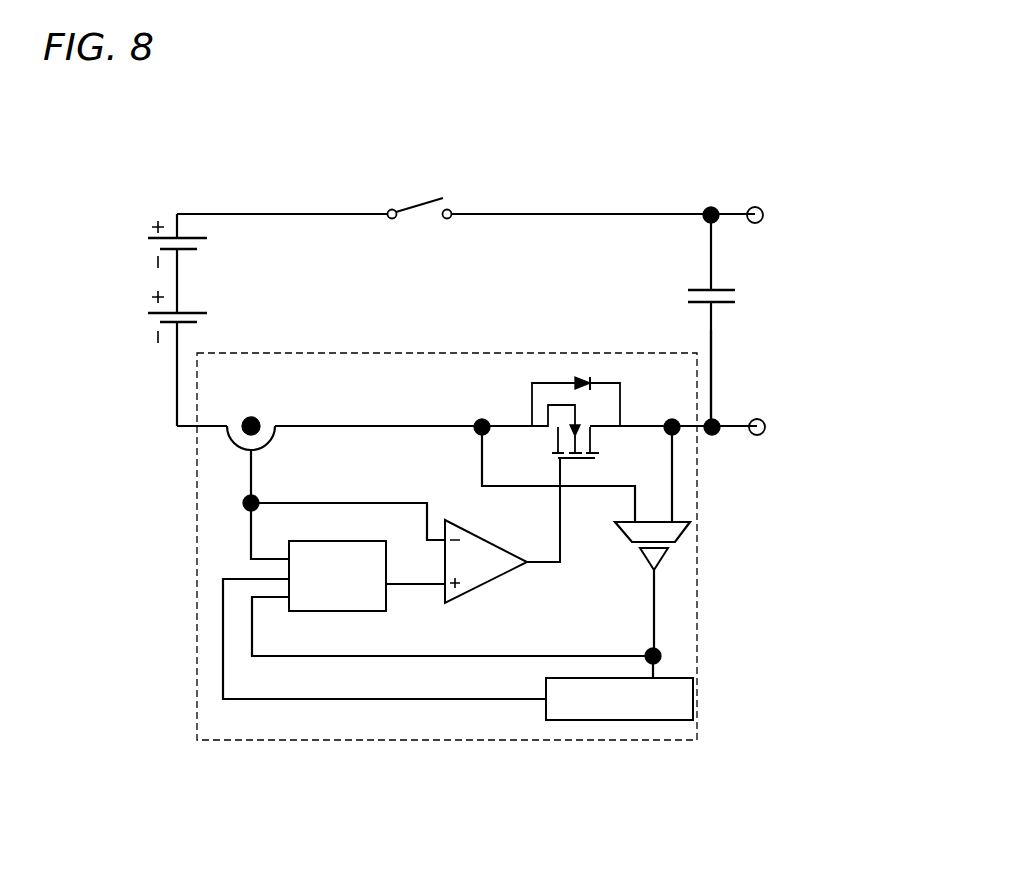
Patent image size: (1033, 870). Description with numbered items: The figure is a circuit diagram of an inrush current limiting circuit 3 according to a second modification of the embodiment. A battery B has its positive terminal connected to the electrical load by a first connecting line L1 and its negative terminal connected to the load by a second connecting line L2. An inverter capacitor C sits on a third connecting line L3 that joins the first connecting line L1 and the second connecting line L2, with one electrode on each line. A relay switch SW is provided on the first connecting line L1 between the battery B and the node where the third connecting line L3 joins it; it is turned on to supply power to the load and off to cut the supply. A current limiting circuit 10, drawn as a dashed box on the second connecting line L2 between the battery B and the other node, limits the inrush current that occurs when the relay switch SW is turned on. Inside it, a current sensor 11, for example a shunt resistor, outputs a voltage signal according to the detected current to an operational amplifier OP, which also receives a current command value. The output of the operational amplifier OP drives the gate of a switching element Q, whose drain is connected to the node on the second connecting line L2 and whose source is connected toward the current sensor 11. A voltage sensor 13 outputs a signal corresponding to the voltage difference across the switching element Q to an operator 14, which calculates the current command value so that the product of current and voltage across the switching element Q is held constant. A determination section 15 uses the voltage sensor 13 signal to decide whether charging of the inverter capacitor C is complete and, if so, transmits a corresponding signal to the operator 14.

The inrush current limiting circuit 3 is at (757, 196).
The current limiting circuit 10 is at (698, 618).
The current sensor 11 is at (259, 418).
The voltage sensor 13 is at (680, 540).
The operator 14 is at (386, 603).
The determination section 15 is at (650, 722).
The battery B is at (163, 284).
The relay switch SW is at (416, 196).
The inverter capacitor C is at (726, 321).
The switching element Q is at (573, 461).
The operational amplifier OP is at (497, 580).
The first connecting line L1 is at (661, 213).
The second connecting line L2 is at (735, 432).
The third connecting line L3 is at (718, 355).